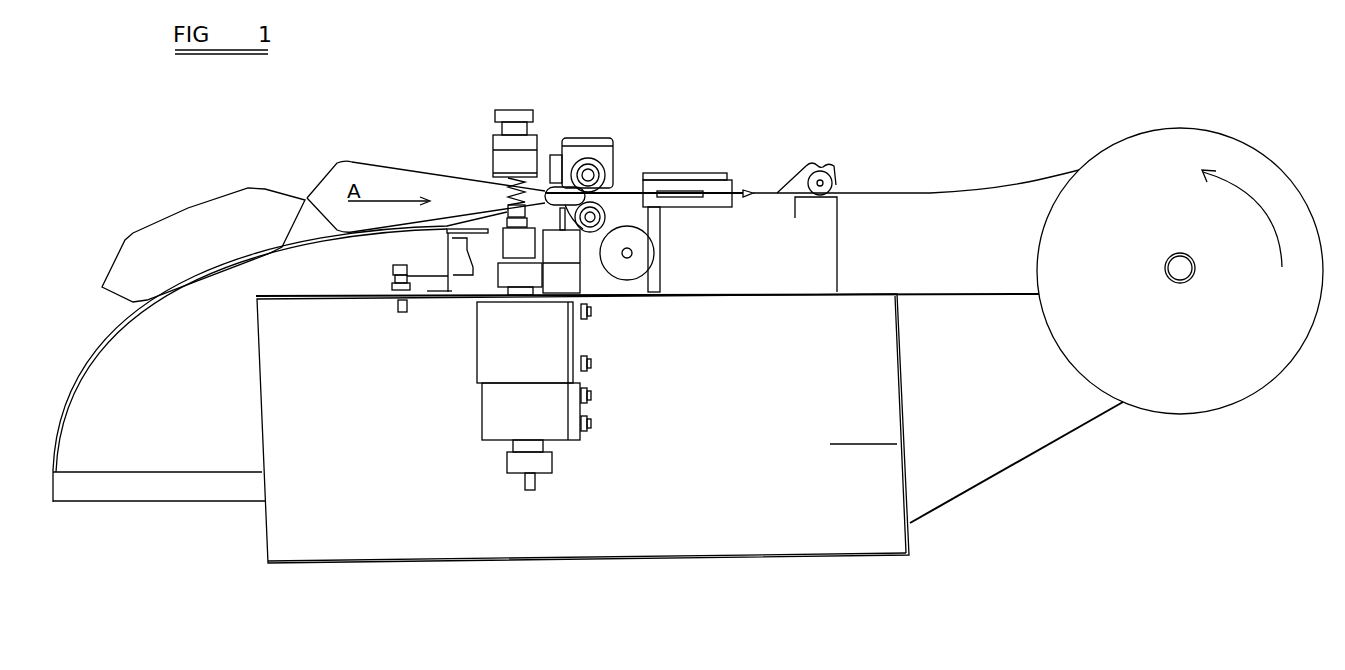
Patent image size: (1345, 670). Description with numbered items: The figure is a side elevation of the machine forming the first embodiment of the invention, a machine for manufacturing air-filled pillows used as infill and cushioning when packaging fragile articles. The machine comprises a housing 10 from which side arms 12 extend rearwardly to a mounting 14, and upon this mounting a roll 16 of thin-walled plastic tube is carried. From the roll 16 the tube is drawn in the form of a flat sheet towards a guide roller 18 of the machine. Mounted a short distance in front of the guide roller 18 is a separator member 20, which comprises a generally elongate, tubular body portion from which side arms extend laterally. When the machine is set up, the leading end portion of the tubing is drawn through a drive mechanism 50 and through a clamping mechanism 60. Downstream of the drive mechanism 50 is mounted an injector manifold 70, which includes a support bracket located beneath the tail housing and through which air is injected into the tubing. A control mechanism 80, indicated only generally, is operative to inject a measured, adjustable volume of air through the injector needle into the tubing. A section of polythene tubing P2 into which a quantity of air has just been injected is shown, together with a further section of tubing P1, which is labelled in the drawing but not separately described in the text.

The housing 10 is at (767, 532).
The side arms 12 is at (1030, 455).
The mounting 14 is at (1191, 282).
The roll of thin-walled plastic tube 16 is at (1228, 140).
The guide roller 18 is at (833, 178).
The separator member 20 is at (742, 186).
The drive mechanism 50 is at (587, 136).
The clamping mechanism 60 is at (517, 103).
The injector manifold 70 is at (587, 280).
The control mechanism 80 is at (602, 411).
The first pack P1 is at (188, 210).
The section of polythene tubing P2 is at (413, 168).